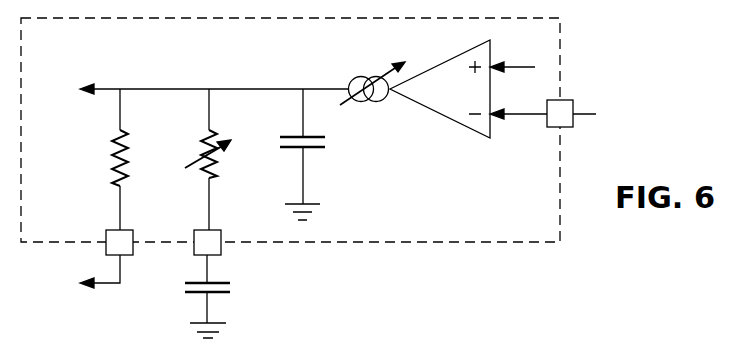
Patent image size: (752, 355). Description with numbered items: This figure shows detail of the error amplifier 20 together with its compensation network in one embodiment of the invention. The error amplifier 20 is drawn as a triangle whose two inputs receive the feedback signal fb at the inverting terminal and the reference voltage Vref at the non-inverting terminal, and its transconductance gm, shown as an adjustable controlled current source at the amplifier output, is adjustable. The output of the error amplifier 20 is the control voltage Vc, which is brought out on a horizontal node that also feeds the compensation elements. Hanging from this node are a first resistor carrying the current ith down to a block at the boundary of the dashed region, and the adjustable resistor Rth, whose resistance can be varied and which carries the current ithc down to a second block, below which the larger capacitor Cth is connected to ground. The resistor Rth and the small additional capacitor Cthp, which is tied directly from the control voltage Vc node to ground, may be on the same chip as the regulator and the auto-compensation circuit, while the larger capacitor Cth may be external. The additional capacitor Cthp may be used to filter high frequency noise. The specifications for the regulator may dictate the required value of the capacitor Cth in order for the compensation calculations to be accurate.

The error amplifier 20 is at (418, 150).
The element Vc is at (214, 75).
The element ith is at (106, 188).
The resistor Rth is at (194, 159).
The element ithc is at (192, 243).
The capacitor Cth is at (189, 307).
The capacitor Cthp is at (328, 154).
The element gm is at (362, 80).
The element Vref is at (520, 57).
The element fb is at (543, 121).